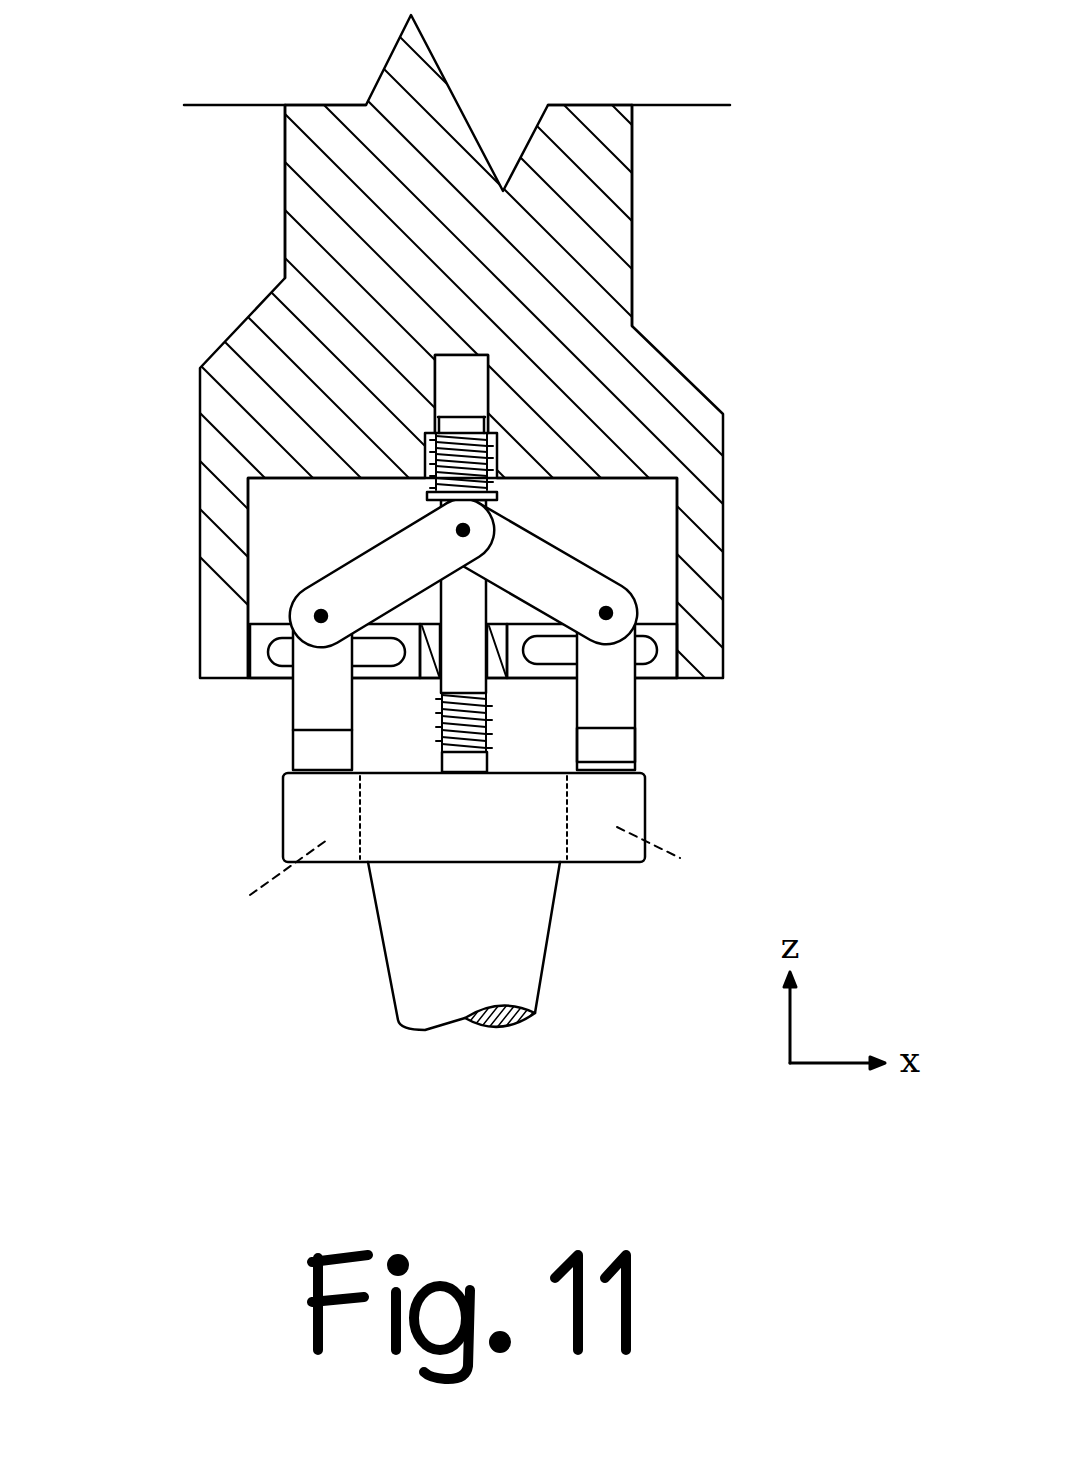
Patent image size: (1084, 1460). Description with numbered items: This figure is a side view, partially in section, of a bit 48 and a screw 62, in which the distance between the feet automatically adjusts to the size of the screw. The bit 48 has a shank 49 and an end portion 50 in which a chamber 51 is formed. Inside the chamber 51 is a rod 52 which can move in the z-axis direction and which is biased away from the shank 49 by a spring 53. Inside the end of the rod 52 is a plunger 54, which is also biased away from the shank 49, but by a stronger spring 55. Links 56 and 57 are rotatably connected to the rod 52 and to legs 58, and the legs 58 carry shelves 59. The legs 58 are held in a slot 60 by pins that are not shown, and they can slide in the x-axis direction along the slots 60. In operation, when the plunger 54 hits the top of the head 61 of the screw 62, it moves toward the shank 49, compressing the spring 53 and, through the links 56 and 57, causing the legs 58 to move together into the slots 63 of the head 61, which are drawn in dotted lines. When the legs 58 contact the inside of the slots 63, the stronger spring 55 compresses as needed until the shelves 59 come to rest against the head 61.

The bit 48 is at (772, 207).
The shank 49 is at (282, 192).
The end portion 50 is at (198, 388).
The chamber 51 is at (622, 525).
The rod 52 is at (470, 425).
The spring 53 is at (430, 458).
The plunger 54 is at (473, 763).
The stronger spring 55 is at (443, 730).
The link 56 is at (349, 558).
The link 57 is at (582, 563).
The legs 58 is at (288, 697).
The shelves 59 is at (620, 727).
The slot 60 is at (282, 657).
The head 61 is at (283, 813).
The screw 62 is at (370, 920).
The slots 63 is at (468, 886).